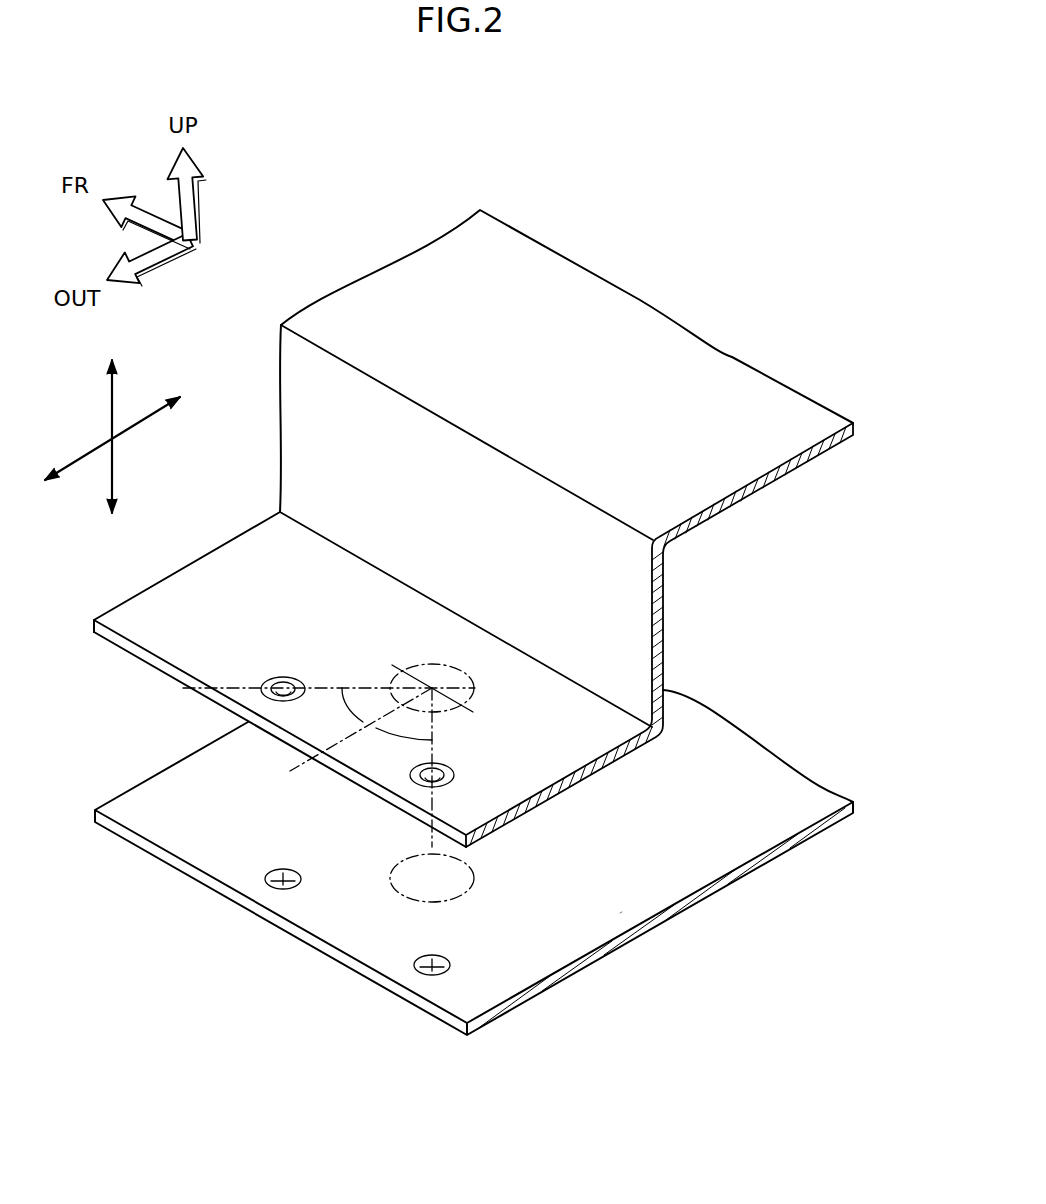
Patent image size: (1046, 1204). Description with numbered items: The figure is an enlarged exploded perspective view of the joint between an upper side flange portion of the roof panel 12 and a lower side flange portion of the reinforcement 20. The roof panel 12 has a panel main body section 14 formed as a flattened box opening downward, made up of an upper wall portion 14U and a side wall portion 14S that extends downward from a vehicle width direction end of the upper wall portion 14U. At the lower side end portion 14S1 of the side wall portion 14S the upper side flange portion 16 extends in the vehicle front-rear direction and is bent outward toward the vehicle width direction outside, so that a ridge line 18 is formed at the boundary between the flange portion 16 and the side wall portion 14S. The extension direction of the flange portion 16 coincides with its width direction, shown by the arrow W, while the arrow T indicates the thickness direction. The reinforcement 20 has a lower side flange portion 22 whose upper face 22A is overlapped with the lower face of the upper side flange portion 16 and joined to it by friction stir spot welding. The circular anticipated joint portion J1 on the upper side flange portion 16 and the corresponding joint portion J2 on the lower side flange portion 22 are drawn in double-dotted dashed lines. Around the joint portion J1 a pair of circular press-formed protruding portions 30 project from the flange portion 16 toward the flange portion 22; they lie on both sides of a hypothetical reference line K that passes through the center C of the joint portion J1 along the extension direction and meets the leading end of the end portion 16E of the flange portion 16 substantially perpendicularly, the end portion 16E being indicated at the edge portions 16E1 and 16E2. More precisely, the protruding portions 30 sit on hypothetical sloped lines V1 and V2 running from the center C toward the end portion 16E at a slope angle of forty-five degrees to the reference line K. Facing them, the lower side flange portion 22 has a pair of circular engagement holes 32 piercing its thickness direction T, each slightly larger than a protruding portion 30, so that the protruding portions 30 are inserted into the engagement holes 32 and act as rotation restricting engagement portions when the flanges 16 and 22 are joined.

The roof panel 12 is at (632, 213).
The panel main body section 14 is at (642, 328).
The upper wall portion 14U is at (723, 372).
The side wall portion 14S is at (421, 432).
The lower side end portion of side wall portion 14S1 is at (303, 460).
The upper side flange portion 16 is at (195, 582).
The ridge line 18 is at (470, 604).
The end portion of upper side flange portion 16E is at (367, 763).
The first end edge portion of flange 16E1 is at (217, 693).
The second end edge portion of flange 16E2 is at (427, 815).
The protruding portion 30 is at (293, 703).
The reinforcement 20 is at (802, 888).
The lower side flange portion 22 is at (667, 877).
The upper face of lower side flange portion 22A is at (620, 913).
The engagement hole 32 is at (283, 890).
The hypothetical sloped line V1 is at (248, 685).
The hypothetical sloped line V2 is at (455, 786).
The center of joint portion C is at (427, 675).
The joint portion of upper side flange portion J1 is at (475, 697).
The joint portion of lower side flange portion J2 is at (474, 878).
The hypothetical reference line K is at (290, 771).
The width direction W is at (137, 417).
The thickness direction T is at (110, 467).